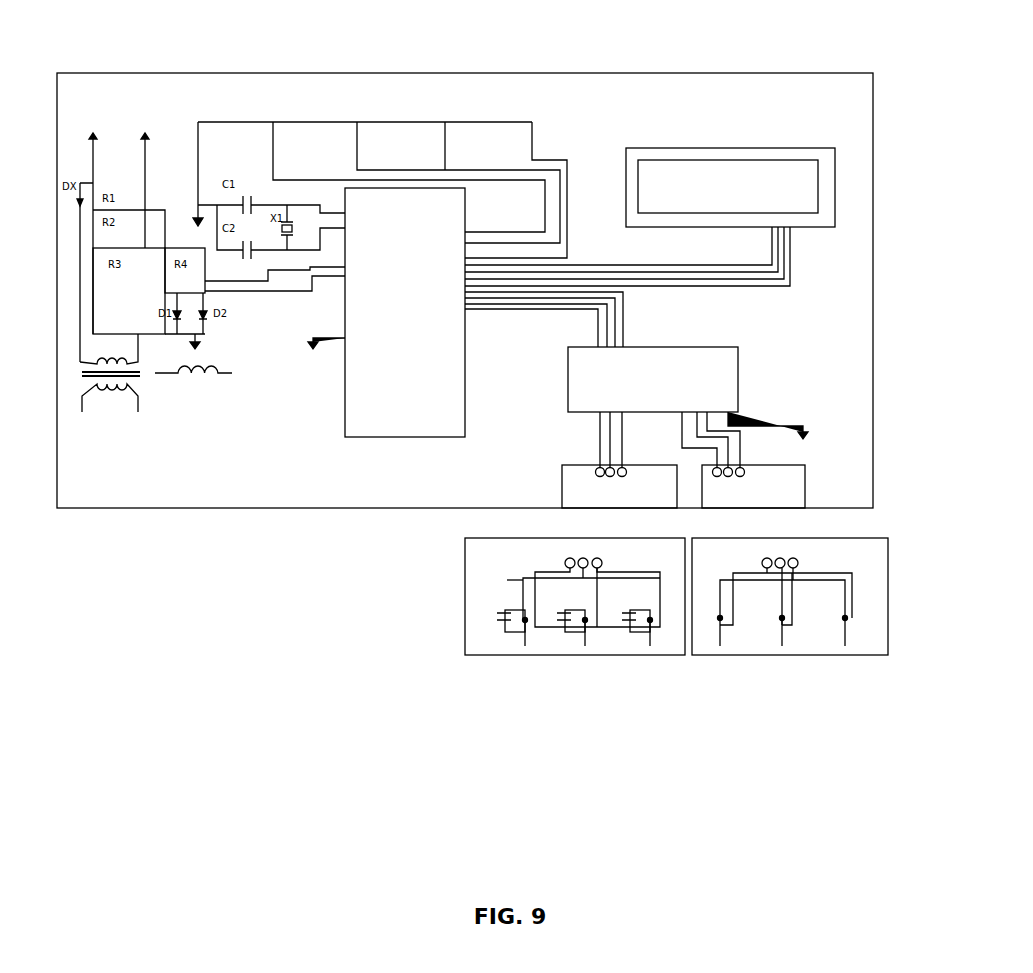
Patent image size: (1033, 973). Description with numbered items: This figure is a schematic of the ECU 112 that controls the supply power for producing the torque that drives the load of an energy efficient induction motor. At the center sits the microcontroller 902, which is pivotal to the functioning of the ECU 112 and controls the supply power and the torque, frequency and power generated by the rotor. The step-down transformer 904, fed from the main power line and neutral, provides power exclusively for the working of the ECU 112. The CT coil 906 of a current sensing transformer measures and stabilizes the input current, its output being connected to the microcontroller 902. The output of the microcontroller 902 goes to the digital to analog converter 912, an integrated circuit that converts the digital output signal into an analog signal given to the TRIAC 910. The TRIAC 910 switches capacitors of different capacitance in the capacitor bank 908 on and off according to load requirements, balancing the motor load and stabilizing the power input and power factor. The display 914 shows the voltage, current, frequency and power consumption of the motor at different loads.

The ECU 112 is at (214, 73).
The microcontroller 902 is at (380, 437).
The step-down transformer 904 is at (95, 412).
The current transformer (CT) coil 906 is at (185, 385).
The capacitor bank 908 is at (492, 612).
The TRIAC 910 is at (852, 612).
The digital to analog converter 912 is at (738, 351).
The display 914 is at (790, 188).